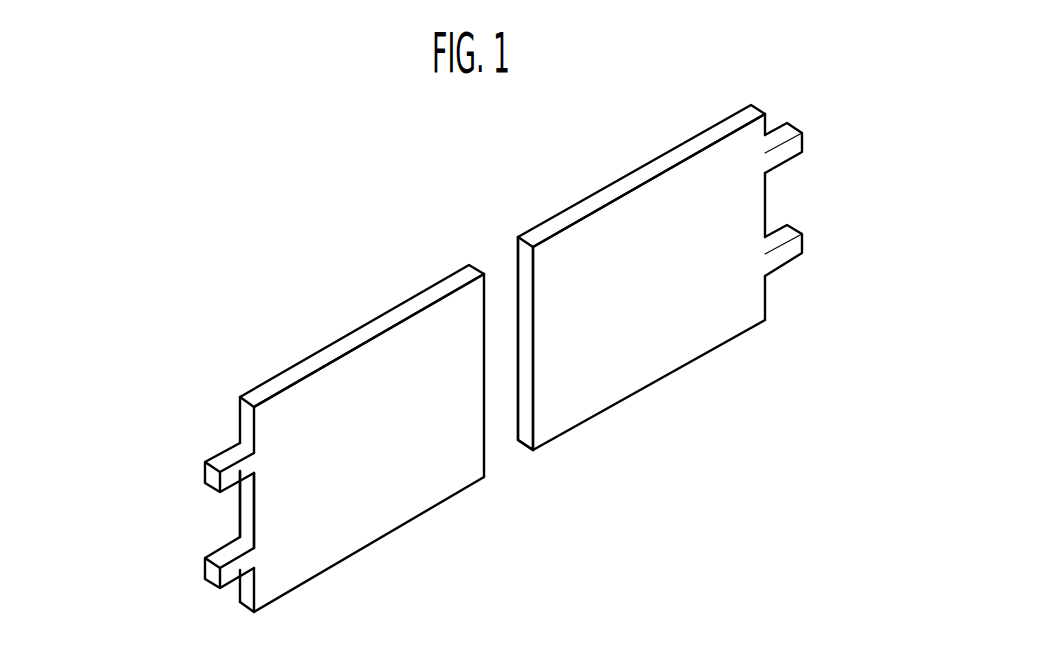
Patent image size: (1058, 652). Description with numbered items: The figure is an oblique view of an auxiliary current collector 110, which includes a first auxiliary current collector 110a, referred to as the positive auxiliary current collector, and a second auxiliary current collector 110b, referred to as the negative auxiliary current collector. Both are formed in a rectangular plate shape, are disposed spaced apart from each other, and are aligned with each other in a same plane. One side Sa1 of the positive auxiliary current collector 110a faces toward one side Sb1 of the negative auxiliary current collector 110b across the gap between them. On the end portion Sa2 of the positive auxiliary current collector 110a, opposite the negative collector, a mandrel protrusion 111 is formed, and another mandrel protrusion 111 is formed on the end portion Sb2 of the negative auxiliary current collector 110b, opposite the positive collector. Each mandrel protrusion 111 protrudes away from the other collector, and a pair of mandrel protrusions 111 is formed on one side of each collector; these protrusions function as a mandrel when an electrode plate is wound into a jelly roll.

The auxiliary current collector 110 is at (638, 100).
The first auxiliary current collector 110a is at (388, 363).
The second auxiliary current collector 110b is at (628, 228).
The mandrel protrusion 111 is at (213, 472).
The one side of the positive auxiliary current collector Sa1 is at (485, 380).
The end portion of the positive auxiliary current collector Sa2 is at (245, 518).
The one side of the negative auxiliary current collector Sb1 is at (523, 348).
The end portion of the negative auxiliary current collector Sb2 is at (767, 198).